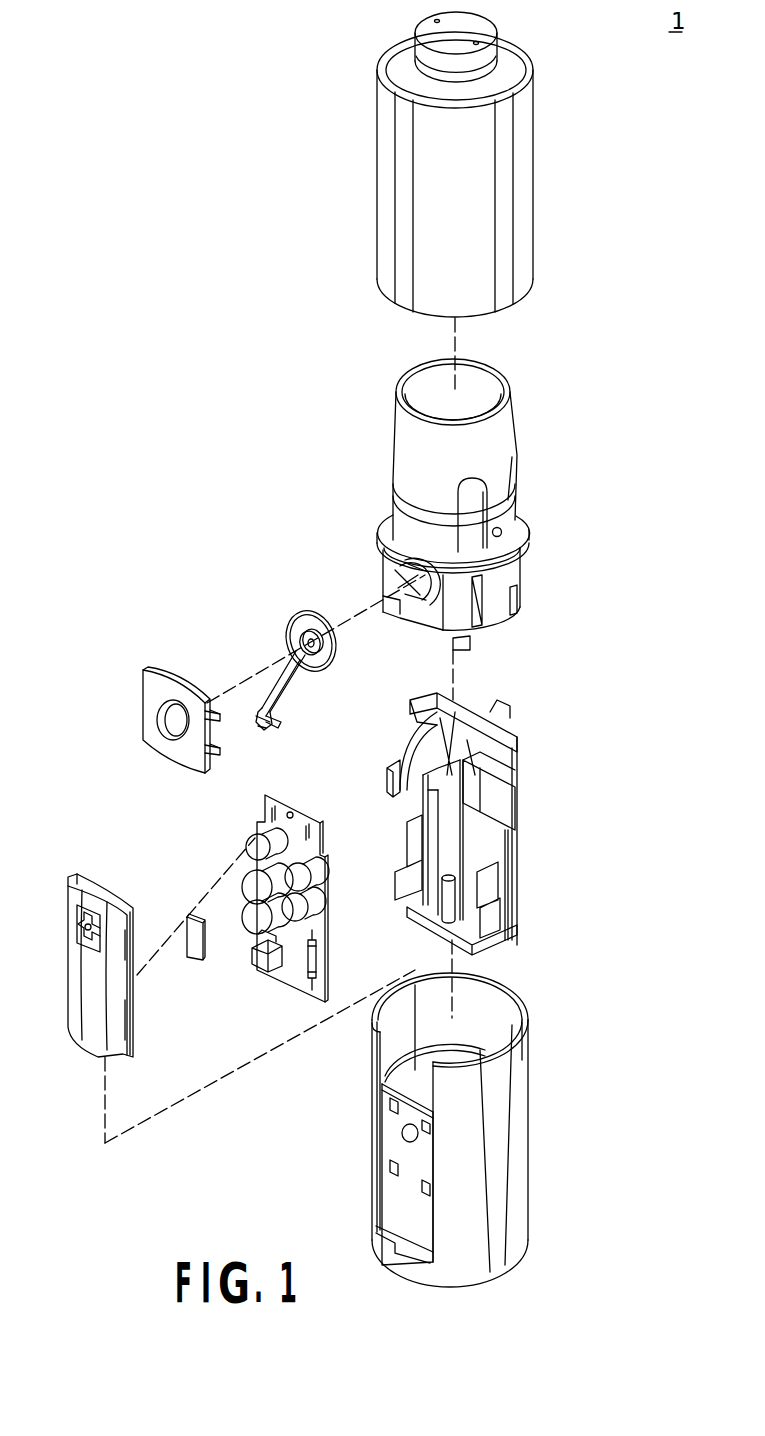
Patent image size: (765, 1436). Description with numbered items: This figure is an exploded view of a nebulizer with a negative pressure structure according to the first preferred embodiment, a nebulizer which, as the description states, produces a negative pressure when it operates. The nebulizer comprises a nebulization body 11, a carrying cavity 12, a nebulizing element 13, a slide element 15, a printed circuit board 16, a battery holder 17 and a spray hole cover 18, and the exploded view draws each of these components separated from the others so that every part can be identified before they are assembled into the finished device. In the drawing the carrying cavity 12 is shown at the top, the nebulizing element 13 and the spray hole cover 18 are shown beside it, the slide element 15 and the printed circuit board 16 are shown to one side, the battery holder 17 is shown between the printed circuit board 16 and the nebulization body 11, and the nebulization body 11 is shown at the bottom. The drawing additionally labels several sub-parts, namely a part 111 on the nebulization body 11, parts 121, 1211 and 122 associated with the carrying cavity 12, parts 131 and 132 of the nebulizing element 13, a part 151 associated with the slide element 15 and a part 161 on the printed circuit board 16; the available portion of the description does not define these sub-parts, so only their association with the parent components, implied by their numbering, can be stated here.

The nebulization body 11 is at (451, 1128).
The inner plate of housing 111 is at (380, 1132).
The carrying cavity 12 is at (607, 225).
The canister holder 121 is at (503, 423).
The gear member 1211 is at (425, 612).
The canister 122 is at (508, 238).
The nebulizing element 13 is at (289, 631).
The disc hub 131 is at (300, 626).
The link rod 132 is at (305, 648).
The slide element 15 is at (91, 866).
The window piece 151 is at (197, 950).
The printed circuit board 16 is at (316, 867).
The fuse 161 is at (317, 962).
The battery holder 17 is at (538, 749).
The spray hole cover 18 is at (176, 665).